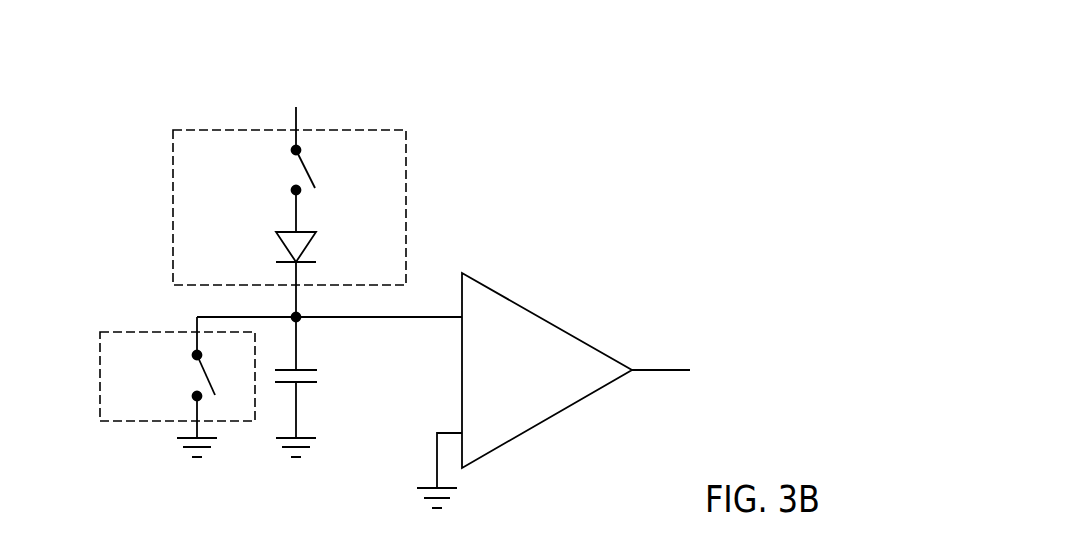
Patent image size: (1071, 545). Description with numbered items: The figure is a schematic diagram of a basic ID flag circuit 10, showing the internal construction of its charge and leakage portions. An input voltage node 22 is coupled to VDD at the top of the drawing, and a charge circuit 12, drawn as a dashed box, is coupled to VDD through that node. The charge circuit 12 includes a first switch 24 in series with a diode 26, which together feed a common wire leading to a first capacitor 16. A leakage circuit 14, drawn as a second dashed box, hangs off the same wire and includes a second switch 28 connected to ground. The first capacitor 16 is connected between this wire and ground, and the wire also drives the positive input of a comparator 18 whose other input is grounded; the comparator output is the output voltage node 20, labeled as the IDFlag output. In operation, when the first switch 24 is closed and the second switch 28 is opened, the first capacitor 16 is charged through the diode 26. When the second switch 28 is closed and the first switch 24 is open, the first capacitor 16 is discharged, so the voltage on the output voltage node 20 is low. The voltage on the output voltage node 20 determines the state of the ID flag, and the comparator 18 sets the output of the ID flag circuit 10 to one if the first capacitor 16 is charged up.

The ID flag circuit 10 is at (648, 120).
The charge circuit 12 is at (172, 160).
The leakage circuit 14 is at (140, 331).
The first capacitor 16 is at (312, 393).
The comparator 18 is at (543, 423).
The output voltage node 20 is at (660, 368).
The input voltage node 22 is at (293, 132).
The first switch 24 is at (302, 150).
The diode 26 is at (319, 250).
The second switch 28 is at (182, 397).